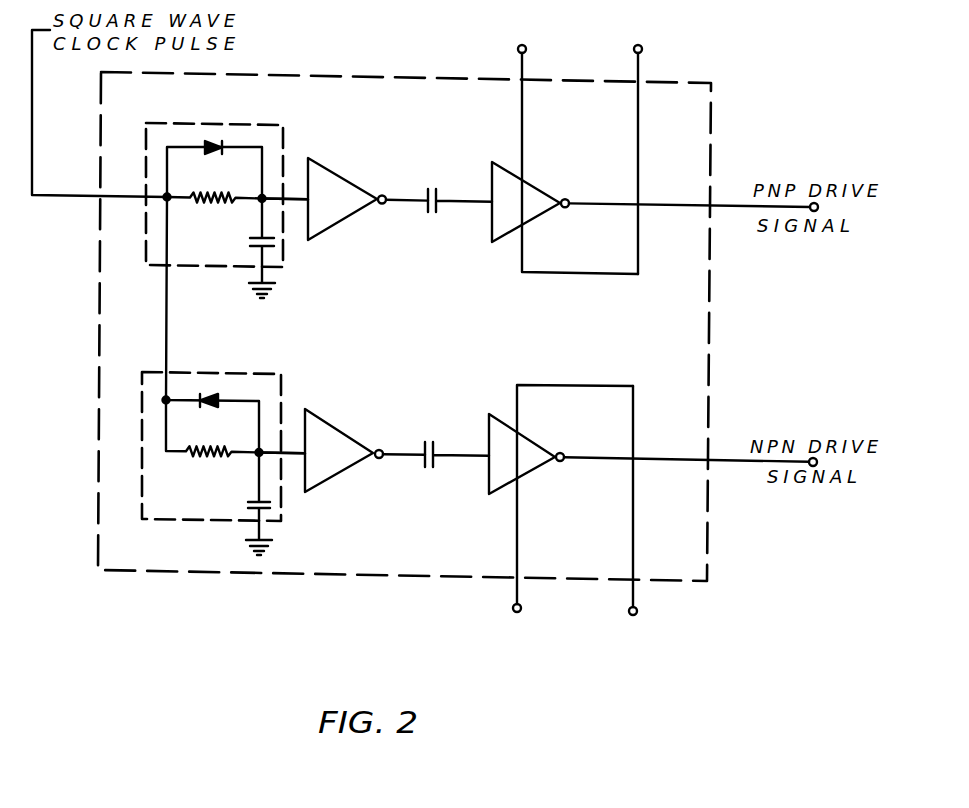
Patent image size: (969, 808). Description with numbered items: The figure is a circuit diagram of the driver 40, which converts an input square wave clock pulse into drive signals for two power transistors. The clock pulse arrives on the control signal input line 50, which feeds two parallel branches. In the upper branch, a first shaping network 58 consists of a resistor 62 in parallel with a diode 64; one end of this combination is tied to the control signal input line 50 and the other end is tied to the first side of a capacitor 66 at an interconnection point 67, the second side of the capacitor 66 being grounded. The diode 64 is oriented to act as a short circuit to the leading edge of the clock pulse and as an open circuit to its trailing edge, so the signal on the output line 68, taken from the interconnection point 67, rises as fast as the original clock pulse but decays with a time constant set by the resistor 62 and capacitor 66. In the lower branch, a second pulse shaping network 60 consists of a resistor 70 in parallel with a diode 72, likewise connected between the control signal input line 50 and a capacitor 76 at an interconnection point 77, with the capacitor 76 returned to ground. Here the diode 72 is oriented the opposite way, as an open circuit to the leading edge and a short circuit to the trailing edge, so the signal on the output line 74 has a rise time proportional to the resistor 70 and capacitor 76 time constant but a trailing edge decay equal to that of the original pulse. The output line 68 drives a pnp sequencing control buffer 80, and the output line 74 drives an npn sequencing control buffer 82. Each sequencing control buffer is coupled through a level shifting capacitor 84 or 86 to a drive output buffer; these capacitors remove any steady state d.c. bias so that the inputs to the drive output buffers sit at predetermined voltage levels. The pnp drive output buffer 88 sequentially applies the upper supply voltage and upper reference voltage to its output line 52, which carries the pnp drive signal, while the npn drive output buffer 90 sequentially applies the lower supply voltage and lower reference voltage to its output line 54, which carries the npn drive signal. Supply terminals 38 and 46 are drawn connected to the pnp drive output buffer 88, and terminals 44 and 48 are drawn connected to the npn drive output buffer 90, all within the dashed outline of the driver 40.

The positive supply terminal (PNP driver) 38 is at (524, 73).
The driver 40 is at (716, 145).
The negative supply terminal (NPN driver) 44 is at (516, 590).
The supply terminal 46 is at (641, 73).
The supply terminal 48 is at (632, 590).
The control signal input line 50 is at (74, 198).
The output line 52 is at (731, 210).
The output line 54 is at (735, 464).
The first shaping network 58 is at (173, 123).
The second pulse shaping network 60 is at (265, 372).
The resistor 62 is at (214, 206).
The diode 64 is at (218, 140).
The capacitor 66 is at (248, 246).
The interconnection point 67 is at (262, 193).
The output line 68 is at (293, 199).
The resistor 70 is at (196, 453).
The diode 72 is at (206, 392).
The output line 74 is at (294, 455).
The capacitor 76 is at (249, 500).
The interconnection point 77 is at (258, 448).
The pnp sequencing control buffer 80 is at (341, 178).
The npn sequencing control buffer 82 is at (331, 425).
The level shifting capacitor 84 is at (427, 214).
The level shifting capacitor 86 is at (437, 443).
The pnp drive output buffer 88 is at (497, 163).
The npn drive output buffer 90 is at (493, 491).